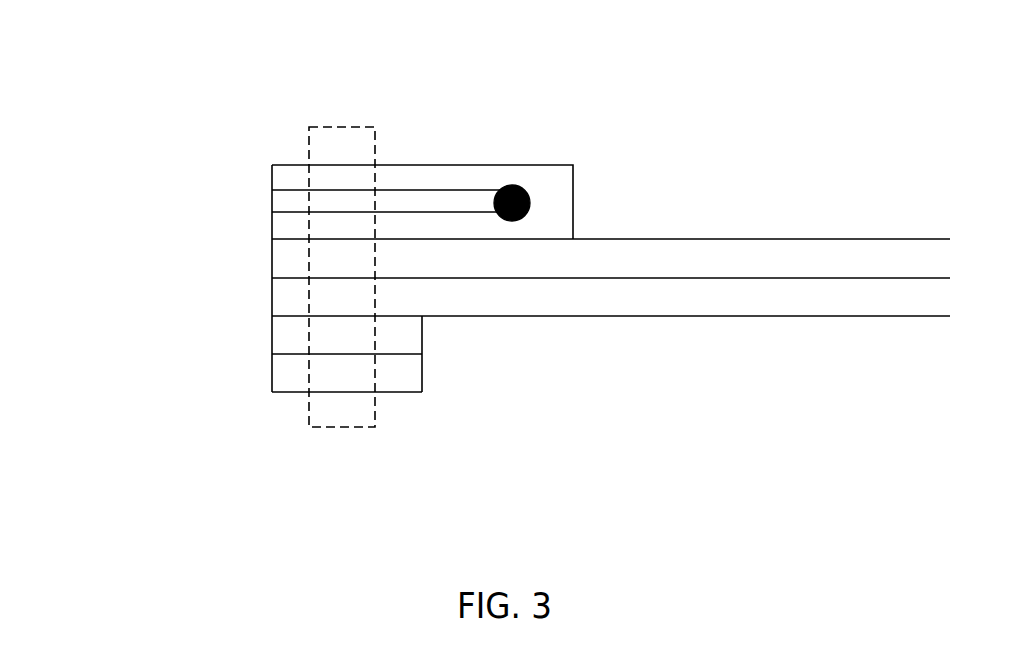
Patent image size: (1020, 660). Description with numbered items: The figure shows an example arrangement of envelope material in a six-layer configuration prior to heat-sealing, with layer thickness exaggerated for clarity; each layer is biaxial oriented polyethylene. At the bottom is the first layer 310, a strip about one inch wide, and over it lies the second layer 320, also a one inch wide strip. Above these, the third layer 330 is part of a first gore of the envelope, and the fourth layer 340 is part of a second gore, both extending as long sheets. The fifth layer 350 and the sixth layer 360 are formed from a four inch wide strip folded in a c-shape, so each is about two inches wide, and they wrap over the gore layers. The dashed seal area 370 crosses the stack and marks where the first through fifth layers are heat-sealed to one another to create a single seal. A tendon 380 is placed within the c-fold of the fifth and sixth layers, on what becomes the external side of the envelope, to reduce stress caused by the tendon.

The first layer of envelope material 310 is at (272, 368).
The second layer of envelope material 320 is at (272, 335).
The third layer of envelope material 330 is at (667, 292).
The fourth layer of envelope material 340 is at (670, 265).
The fifth layer of envelope material 350 is at (272, 212).
The sixth layer of envelope material 360 is at (272, 165).
The seal area 370 is at (362, 127).
The tendon 380 is at (517, 185).